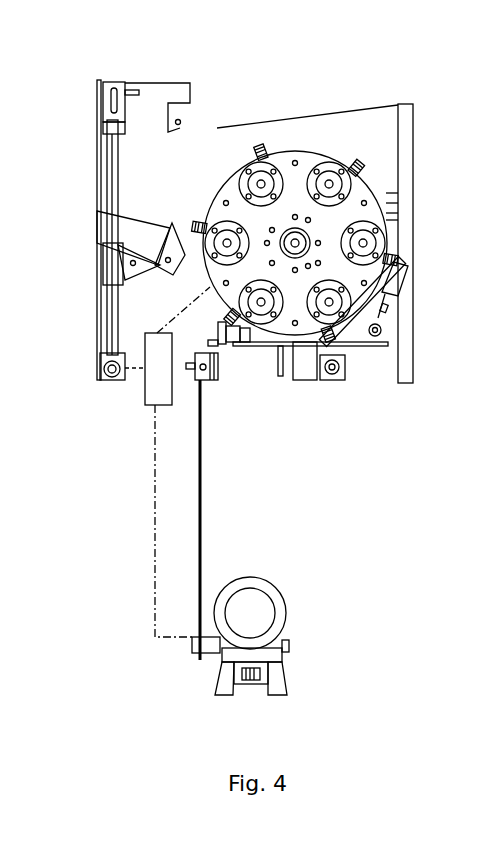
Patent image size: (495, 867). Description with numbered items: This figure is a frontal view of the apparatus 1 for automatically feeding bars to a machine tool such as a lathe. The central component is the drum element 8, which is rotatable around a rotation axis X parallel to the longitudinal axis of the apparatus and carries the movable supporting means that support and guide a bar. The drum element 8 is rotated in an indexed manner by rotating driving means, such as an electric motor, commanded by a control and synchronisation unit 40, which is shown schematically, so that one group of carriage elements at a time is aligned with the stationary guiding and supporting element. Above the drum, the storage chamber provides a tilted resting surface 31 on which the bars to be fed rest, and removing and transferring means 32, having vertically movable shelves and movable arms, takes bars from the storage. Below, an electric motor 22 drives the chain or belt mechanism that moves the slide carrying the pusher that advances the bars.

The apparatus 1 is at (118, 449).
The drum element 8 is at (332, 228).
The rotation axis X is at (297, 243).
The electric motor 22 is at (260, 615).
The tilted resting surface 31 is at (333, 112).
The removing and transferring means 32 is at (133, 240).
The control and synchronisation unit 40 is at (170, 386).